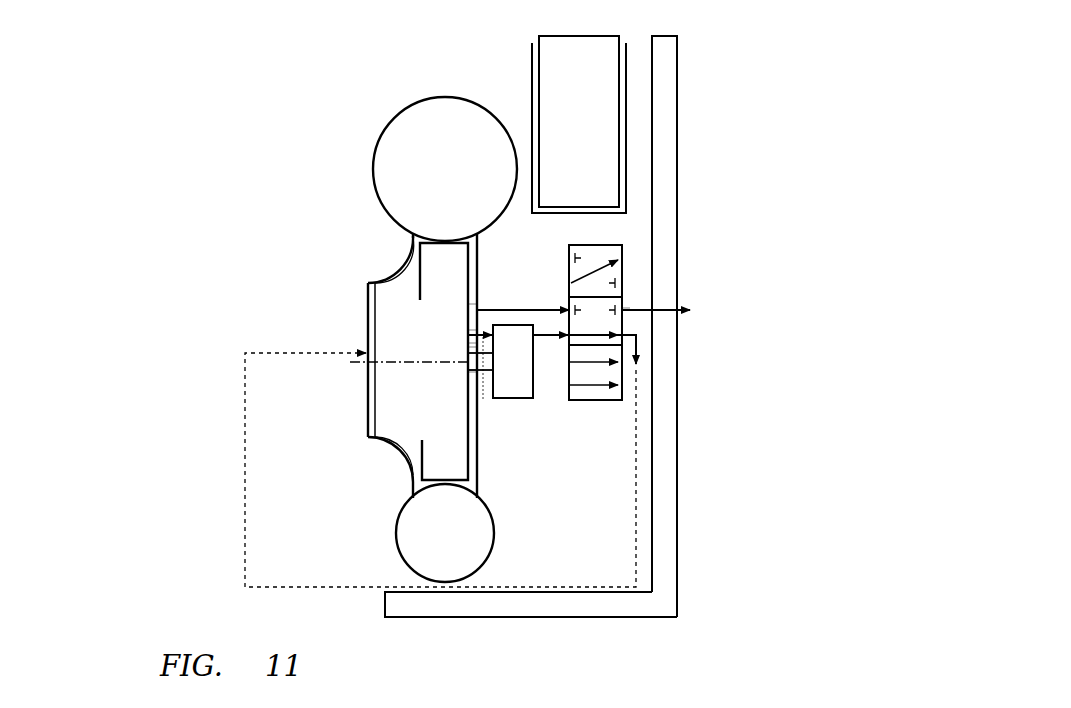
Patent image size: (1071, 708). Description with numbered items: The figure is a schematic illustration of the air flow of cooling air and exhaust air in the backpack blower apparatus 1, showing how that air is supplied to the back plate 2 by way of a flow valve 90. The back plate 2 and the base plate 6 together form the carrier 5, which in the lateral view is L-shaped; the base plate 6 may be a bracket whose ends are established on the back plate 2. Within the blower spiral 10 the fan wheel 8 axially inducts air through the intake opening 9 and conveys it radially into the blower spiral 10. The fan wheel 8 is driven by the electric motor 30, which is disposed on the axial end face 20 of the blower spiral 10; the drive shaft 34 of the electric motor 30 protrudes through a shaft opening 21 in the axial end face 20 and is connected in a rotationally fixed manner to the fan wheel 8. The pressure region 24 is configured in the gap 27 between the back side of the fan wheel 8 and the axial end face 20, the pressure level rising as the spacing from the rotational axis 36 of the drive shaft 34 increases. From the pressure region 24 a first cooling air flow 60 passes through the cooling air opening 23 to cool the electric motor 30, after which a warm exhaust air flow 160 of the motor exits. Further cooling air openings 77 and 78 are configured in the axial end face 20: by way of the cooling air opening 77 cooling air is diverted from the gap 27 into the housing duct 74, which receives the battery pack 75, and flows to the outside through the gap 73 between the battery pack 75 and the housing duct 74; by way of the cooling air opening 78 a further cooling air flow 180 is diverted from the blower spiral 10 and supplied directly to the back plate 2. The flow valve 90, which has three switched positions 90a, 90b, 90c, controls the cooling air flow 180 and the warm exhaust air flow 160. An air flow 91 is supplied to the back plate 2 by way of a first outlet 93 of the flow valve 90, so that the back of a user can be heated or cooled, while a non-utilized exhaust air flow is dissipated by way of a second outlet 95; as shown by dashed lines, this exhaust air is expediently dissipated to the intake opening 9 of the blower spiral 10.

The backpack blower apparatus 1 is at (338, 170).
The back plate 2 is at (663, 145).
The carrier 5 is at (680, 575).
The base plate 6 is at (390, 603).
The fan wheel 8 is at (368, 422).
The intake opening 9 is at (397, 417).
The blower spiral 10 is at (377, 200).
The axial end face 20 is at (479, 252).
The shaft opening 21 is at (468, 372).
The cooling air opening 23 is at (470, 347).
The pressure region 24 is at (470, 345).
The gap 27 is at (479, 274).
The electric motor 30 is at (513, 385).
The drive shaft 34 is at (468, 370).
The rotational axis 36 is at (347, 362).
The cooling air flow 60 is at (484, 400).
The gap 73 is at (531, 60).
The housing duct 74 is at (531, 82).
The battery pack 75 is at (596, 56).
The cooling air opening 77 is at (470, 306).
The cooling air opening 78 is at (470, 330).
The flow valve 90 is at (623, 270).
The switched position 90a is at (623, 250).
The switched position 90b is at (623, 300).
The switched position 90c is at (623, 395).
The air flow 91 is at (690, 312).
The first outlet 93 is at (623, 310).
The second outlet 95 is at (638, 346).
The exhaust air flow 160 is at (545, 343).
The cooling air flow 180 is at (507, 310).